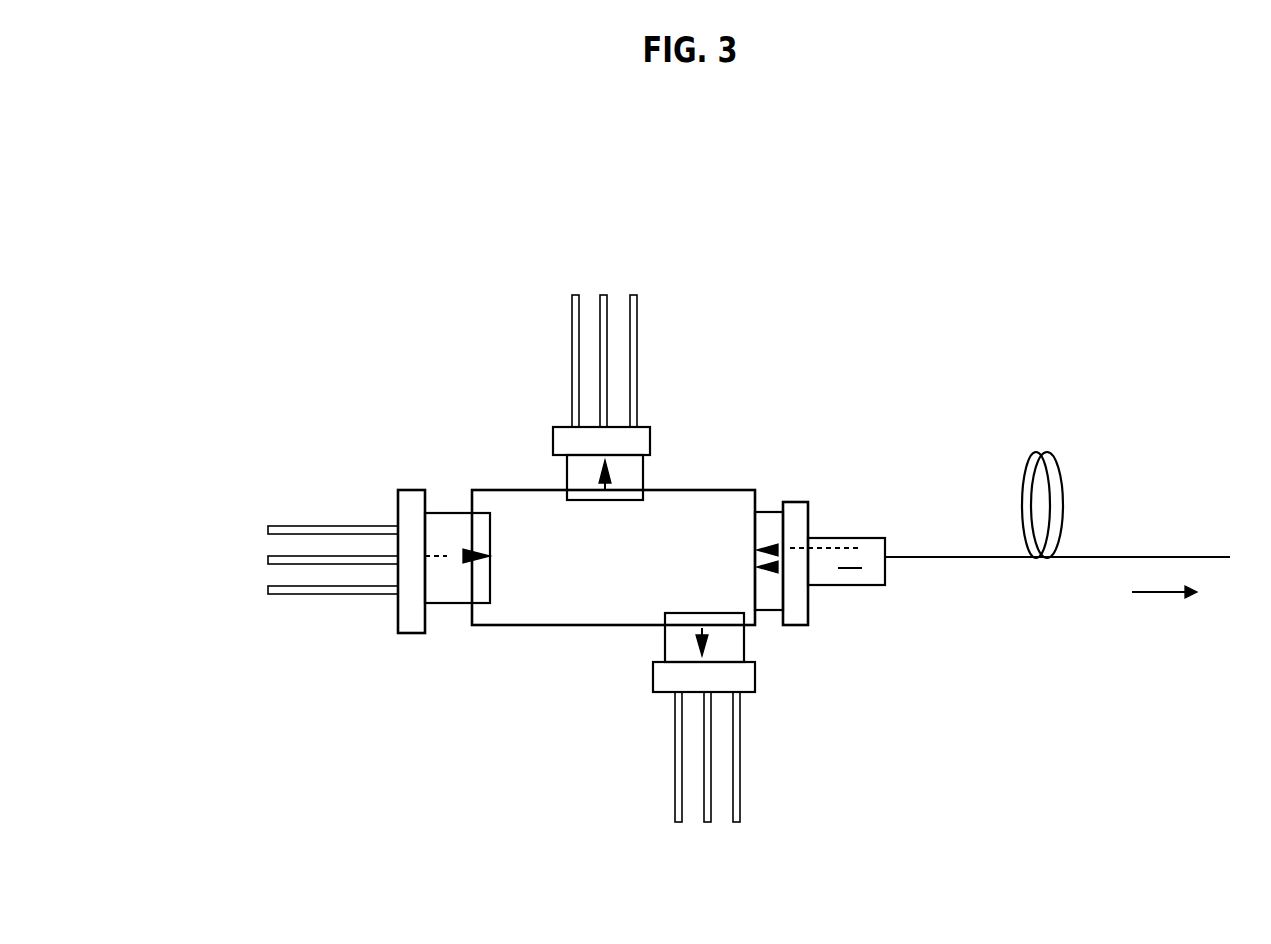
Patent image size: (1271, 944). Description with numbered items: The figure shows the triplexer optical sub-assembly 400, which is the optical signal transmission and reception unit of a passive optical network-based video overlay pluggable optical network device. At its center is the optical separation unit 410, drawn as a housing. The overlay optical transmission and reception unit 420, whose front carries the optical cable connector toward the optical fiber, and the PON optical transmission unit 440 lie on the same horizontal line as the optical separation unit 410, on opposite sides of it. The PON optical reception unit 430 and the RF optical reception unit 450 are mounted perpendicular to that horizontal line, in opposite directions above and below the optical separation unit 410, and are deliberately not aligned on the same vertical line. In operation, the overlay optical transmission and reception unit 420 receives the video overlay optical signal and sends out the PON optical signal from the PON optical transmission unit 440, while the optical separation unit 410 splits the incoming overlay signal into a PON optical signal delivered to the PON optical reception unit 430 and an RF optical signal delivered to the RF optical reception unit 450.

The triplexer optical sub-assembly 400 is at (822, 212).
The optical separation unit 410 is at (708, 483).
The overlay optical transmission and reception unit 420 is at (860, 533).
The PON optical reception unit 430 is at (660, 420).
The PON optical transmission unit 440 is at (421, 480).
The RF optical reception unit 450 is at (640, 680).